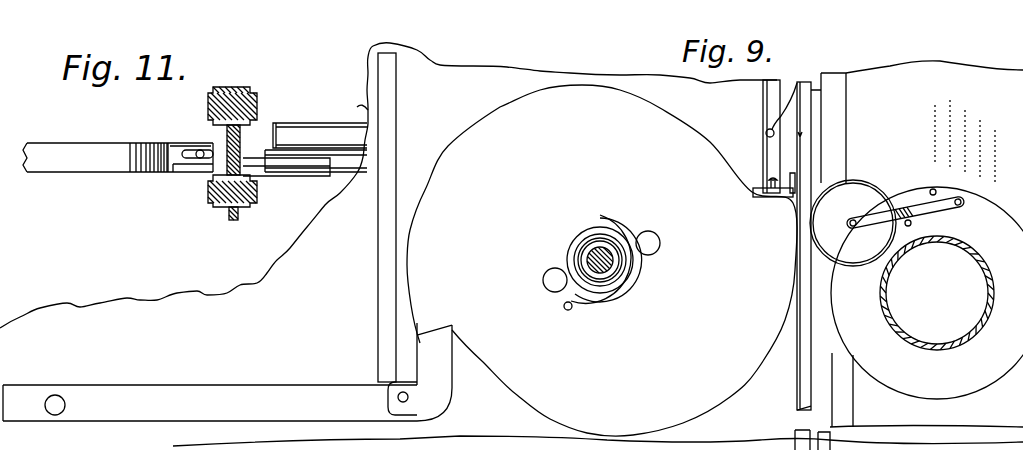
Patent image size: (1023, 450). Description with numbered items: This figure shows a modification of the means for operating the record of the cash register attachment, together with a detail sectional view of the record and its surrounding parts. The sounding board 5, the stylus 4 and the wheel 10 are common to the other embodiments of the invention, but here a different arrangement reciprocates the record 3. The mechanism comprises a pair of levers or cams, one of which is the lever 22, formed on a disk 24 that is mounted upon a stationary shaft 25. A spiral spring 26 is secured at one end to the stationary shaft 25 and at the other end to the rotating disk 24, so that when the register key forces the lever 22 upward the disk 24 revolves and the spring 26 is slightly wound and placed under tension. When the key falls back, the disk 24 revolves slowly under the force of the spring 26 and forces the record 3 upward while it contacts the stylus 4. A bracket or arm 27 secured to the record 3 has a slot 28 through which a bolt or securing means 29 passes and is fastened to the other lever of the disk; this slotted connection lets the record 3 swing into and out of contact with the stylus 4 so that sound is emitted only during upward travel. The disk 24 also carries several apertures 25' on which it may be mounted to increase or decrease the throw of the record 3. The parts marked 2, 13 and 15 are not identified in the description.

In FIG. 9, the frame plate 2 is at (380, 260).
In FIG. 9, the record 3 is at (811, 100).
In FIG. 11, the stylus 4 is at (241, 133).
In FIG. 9, the stylus 4 is at (831, 271).
In FIG. 11, the sounding board 5 is at (313, 126).
In FIG. 11, the wheel 10 is at (263, 170).
In FIG. 9, the wheel 10 is at (887, 212).
In FIG. 11, the plate 13 is at (245, 132).
In FIG. 11, the flange collar 15 is at (253, 97).
In FIG. 9, the lever or cam 22 is at (430, 313).
In FIG. 9, the disk 24 is at (505, 108).
In FIG. 9, the stationary shaft 25 is at (568, 260).
In FIG. 9, the apertures 25' is at (620, 284).
In FIG. 9, the spiral spring 26 is at (611, 244).
In FIG. 11, the bracket or arm 27 is at (178, 166).
In FIG. 9, the bracket or arm 27 is at (778, 197).
In FIG. 11, the slot 28 is at (187, 138).
In FIG. 9, the slot 28 is at (778, 246).
In FIG. 11, the bolt or securing means 29 is at (200, 158).
In FIG. 9, the bolt or securing means 29 is at (773, 175).